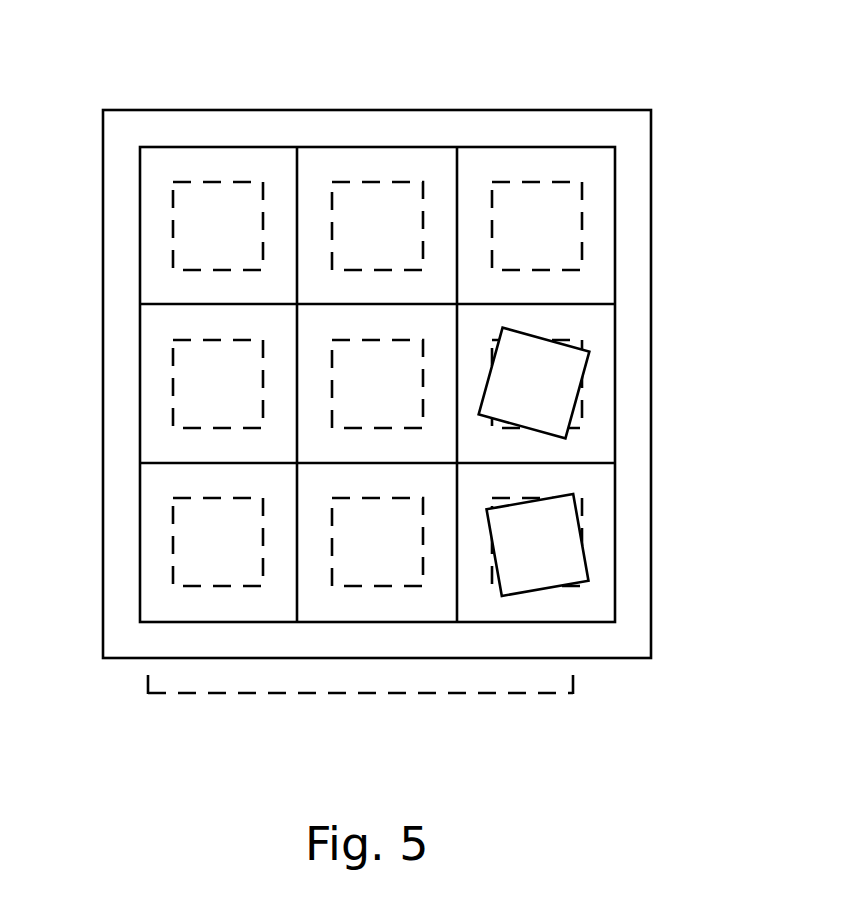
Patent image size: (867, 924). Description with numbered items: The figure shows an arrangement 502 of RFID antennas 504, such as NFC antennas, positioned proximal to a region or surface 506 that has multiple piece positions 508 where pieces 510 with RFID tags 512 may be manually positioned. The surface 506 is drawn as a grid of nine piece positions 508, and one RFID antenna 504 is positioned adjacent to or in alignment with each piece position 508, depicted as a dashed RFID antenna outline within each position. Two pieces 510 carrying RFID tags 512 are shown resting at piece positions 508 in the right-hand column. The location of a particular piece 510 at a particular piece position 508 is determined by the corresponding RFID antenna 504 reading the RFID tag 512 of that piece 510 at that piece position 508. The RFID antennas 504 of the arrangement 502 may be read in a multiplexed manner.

The arrangement 502 is at (507, 693).
The RFID antenna 504 is at (244, 178).
The region or surface 506 is at (486, 110).
The piece position 508 is at (150, 182).
The piece 510 is at (622, 464).
The RFID tag 512 is at (555, 570).